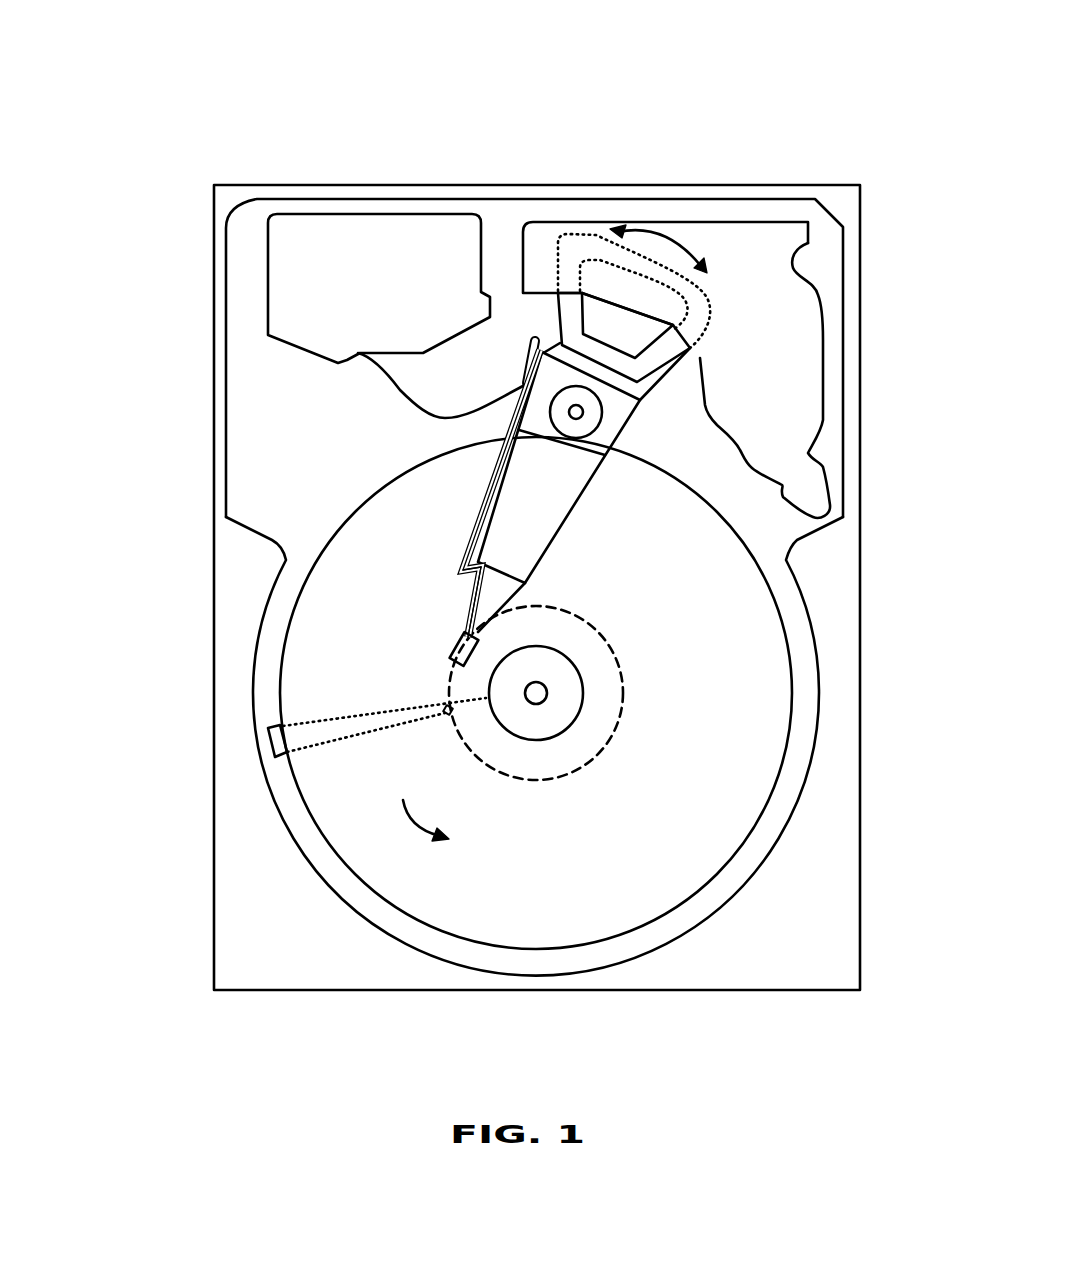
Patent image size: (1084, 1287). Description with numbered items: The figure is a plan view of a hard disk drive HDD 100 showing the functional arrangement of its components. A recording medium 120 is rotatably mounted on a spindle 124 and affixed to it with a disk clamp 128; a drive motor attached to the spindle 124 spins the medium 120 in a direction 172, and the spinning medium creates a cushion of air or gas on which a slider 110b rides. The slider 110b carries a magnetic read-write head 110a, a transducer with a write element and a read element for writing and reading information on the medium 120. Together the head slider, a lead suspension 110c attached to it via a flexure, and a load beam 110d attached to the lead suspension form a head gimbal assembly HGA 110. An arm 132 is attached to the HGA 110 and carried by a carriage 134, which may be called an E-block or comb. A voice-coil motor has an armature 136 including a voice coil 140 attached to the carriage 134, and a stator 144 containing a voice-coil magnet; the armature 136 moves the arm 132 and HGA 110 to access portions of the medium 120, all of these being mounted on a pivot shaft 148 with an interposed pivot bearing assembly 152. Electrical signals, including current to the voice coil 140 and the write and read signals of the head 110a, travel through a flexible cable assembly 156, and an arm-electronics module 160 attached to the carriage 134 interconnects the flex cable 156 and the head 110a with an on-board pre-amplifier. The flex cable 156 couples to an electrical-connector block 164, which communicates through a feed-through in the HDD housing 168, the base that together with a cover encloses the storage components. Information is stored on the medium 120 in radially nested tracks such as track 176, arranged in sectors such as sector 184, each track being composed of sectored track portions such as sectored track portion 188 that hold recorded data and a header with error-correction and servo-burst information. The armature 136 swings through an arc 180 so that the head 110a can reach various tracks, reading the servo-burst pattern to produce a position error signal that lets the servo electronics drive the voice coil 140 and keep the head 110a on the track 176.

The hard disk drive 100 is at (143, 68).
The head gimbal assembly 110 is at (140, 495).
The magnetic read-write head 110a is at (452, 663).
The slider 110b is at (457, 633).
The lead suspension 110c is at (475, 598).
The load beam 110d is at (463, 565).
The recording medium 120 is at (727, 647).
The spindle 124 is at (538, 693).
The disk clamp 128 is at (563, 710).
The arm 132 is at (527, 528).
The carriage 134 is at (595, 443).
The armature 136 is at (560, 343).
The voice coil 140 is at (570, 292).
The stator 144 is at (790, 313).
The pivot shaft 148 is at (577, 412).
The pivot bearing assembly 152 is at (590, 424).
The flexible cable assembly 156 is at (393, 387).
The arm-electronics module 160 is at (527, 381).
The electrical-connector block 164 is at (293, 285).
The HDD housing 168 is at (838, 200).
The direction 172 is at (417, 815).
The track 176 is at (613, 652).
The arc 180 is at (657, 240).
The sector 184 is at (268, 738).
The sectored track portion 188 is at (445, 705).